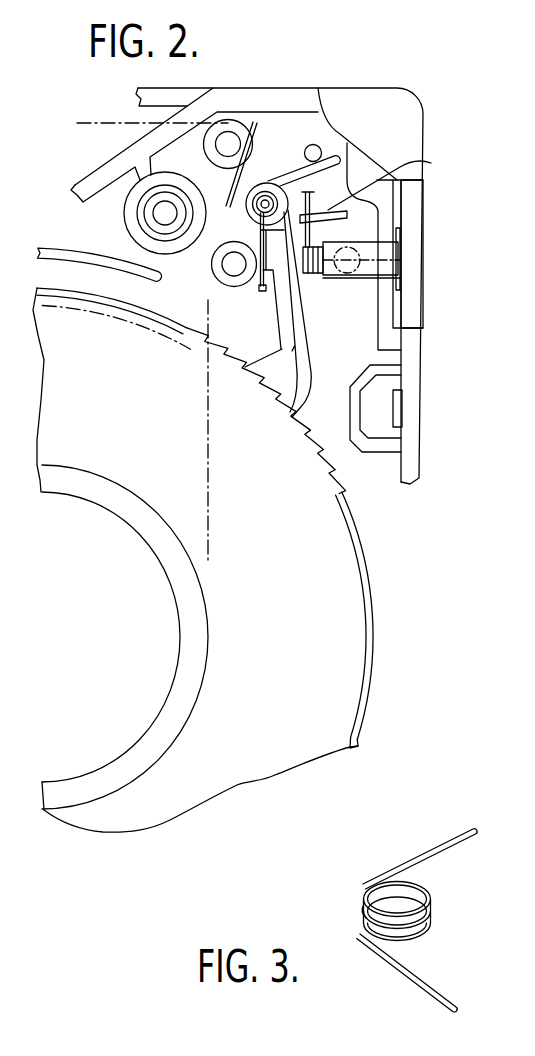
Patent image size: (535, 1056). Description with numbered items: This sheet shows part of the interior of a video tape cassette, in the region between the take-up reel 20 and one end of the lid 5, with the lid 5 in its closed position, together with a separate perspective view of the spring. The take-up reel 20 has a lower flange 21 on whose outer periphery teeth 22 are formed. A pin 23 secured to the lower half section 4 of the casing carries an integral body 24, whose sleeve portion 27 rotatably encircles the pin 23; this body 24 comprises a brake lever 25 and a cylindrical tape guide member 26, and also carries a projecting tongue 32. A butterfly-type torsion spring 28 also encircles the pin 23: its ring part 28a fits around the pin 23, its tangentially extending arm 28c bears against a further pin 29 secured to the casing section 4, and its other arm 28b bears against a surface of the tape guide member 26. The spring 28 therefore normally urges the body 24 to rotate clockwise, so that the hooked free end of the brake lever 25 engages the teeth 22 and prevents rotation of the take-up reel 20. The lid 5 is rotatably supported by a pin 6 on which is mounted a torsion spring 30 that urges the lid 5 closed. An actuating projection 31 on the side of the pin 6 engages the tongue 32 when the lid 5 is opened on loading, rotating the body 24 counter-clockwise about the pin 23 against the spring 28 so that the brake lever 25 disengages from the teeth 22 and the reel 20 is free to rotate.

In FIG. 2, the lower half section 4 is at (412, 398).
In FIG. 2, the lid 5 is at (413, 197).
In FIG. 2, the pin 6 is at (392, 272).
In FIG. 2, the take-up reel 20 is at (345, 669).
In FIG. 2, the lower flange 21 is at (372, 555).
In FIG. 2, the teeth 22 is at (330, 486).
In FIG. 2, the pin 23 is at (266, 198).
In FIG. 2, the integral body 24 is at (320, 326).
In FIG. 2, the brake lever 25 is at (245, 367).
In FIG. 2, the tape guide member 26 is at (211, 264).
In FIG. 2, the sleeve portion 27 is at (252, 185).
In FIG. 2, the torsion spring 28 is at (243, 210).
In FIG. 3, the torsion spring 28 is at (489, 940).
In FIG. 2, the ring part 28a is at (333, 164).
In FIG. 3, the ring part 28a is at (363, 914).
In FIG. 2, the arm 28b is at (339, 157).
In FIG. 3, the arm 28b is at (464, 845).
In FIG. 2, the arm 28c is at (262, 290).
In FIG. 3, the arm 28c is at (398, 966).
In FIG. 2, the further pin 29 is at (313, 144).
In FIG. 2, the torsion spring 30 is at (315, 274).
In FIG. 2, the actuating projection 31 is at (353, 257).
In FIG. 2, the tongue 32 is at (393, 179).